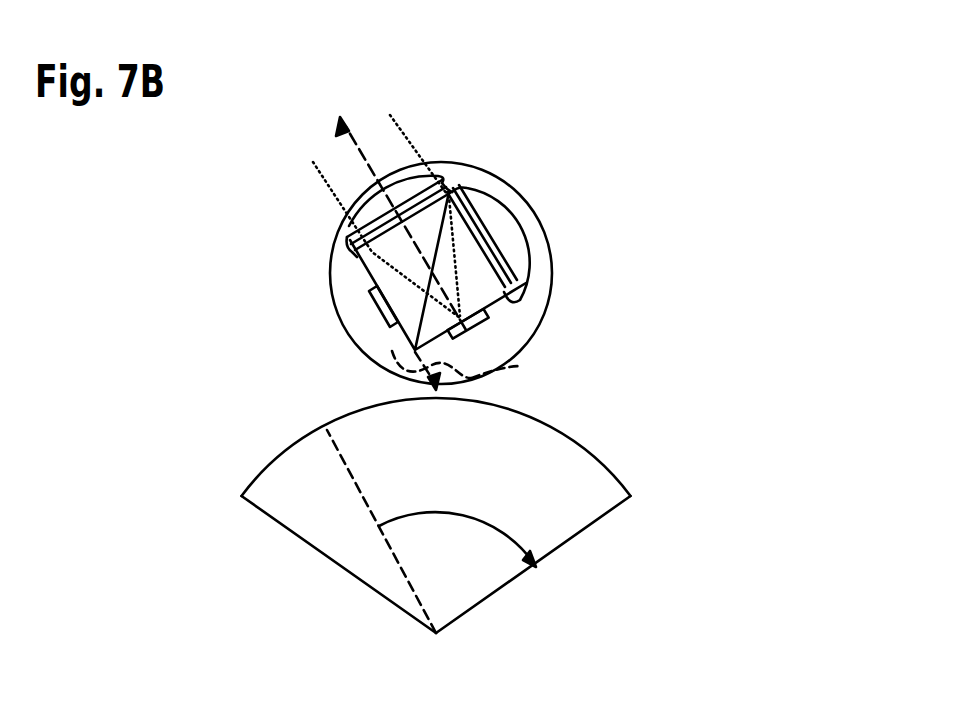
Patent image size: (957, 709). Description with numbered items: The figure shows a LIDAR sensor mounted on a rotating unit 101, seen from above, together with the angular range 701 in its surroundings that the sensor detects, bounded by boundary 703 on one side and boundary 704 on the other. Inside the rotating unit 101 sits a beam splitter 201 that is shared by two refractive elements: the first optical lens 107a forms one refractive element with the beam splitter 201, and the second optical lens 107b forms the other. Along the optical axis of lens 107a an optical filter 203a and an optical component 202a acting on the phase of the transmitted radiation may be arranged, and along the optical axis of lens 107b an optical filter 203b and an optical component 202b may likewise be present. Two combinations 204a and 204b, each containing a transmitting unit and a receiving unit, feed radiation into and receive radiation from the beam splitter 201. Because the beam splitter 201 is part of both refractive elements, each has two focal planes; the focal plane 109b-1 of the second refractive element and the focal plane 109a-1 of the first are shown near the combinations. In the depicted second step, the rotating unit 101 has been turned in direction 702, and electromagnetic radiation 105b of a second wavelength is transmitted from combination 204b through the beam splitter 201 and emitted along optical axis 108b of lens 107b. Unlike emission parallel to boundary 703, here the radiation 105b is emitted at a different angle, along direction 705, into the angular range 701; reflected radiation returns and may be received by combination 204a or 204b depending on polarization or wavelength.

The rotating unit 101 is at (332, 252).
The electromagnetic radiation of a second wavelength 105b is at (347, 218).
The second optical lens 107b is at (348, 226).
The first optical lens 107a is at (512, 236).
The optical axis of second optical lens 108b is at (350, 150).
The first focal plane of second refractive element 109b-1 is at (392, 351).
The first focal plane of first refractive element 109a-1 is at (522, 366).
The beam splitter 201 is at (478, 186).
The optical component acting on phase 202b is at (460, 186).
The optical filter 203b is at (452, 186).
The optical component acting on phase 202a is at (540, 313).
The optical filter 203a is at (525, 308).
The combination of transmitting unit and receiving unit 204a is at (369, 305).
The combination of transmitting unit and receiving unit 204b is at (486, 325).
The angular range 701 is at (273, 461).
The direction of rotation 702 is at (468, 513).
The boundary of angular range 703 is at (252, 502).
The boundary of angular range 704 is at (618, 504).
The different direction of emission 705 is at (327, 430).